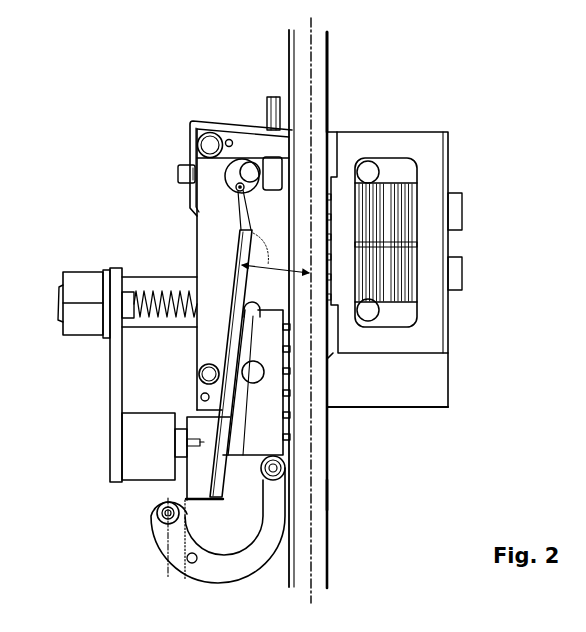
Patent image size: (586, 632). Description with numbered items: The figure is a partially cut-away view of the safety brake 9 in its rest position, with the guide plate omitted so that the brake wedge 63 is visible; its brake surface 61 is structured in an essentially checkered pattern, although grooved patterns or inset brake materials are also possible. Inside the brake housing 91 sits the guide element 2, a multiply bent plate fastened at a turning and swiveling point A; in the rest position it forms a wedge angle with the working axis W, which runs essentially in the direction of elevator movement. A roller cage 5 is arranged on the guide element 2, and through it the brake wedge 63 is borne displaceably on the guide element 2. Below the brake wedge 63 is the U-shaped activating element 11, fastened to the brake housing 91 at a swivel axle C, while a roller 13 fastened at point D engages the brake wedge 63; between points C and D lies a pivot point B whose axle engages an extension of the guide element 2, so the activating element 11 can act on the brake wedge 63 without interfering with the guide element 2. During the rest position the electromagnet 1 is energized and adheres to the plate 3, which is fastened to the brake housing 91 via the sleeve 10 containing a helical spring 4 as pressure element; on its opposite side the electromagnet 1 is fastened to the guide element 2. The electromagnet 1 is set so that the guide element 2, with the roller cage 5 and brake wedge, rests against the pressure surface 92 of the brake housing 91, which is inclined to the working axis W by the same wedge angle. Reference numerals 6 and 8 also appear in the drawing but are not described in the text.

The electromagnet 1 is at (153, 463).
The guide element 2 is at (233, 203).
The plate 3 is at (108, 373).
The helical spring 4 is at (140, 278).
The roller cage 5 is at (330, 441).
The contact element 6 is at (330, 410).
The rail 8 is at (328, 97).
The safety brake 9 is at (410, 83).
The sleeve 10 is at (182, 278).
The activating element 11 is at (330, 540).
The roller 13 is at (330, 463).
The brake surface 61 is at (340, 383).
The brake wedge 63 is at (330, 410).
The brake housing 91 is at (423, 140).
The pressure surface 92 is at (200, 338).
The turning and swiveling point A is at (233, 124).
The pivot point B is at (162, 562).
The swivel axle C is at (160, 532).
The point D is at (330, 497).
The working axis W is at (330, 570).